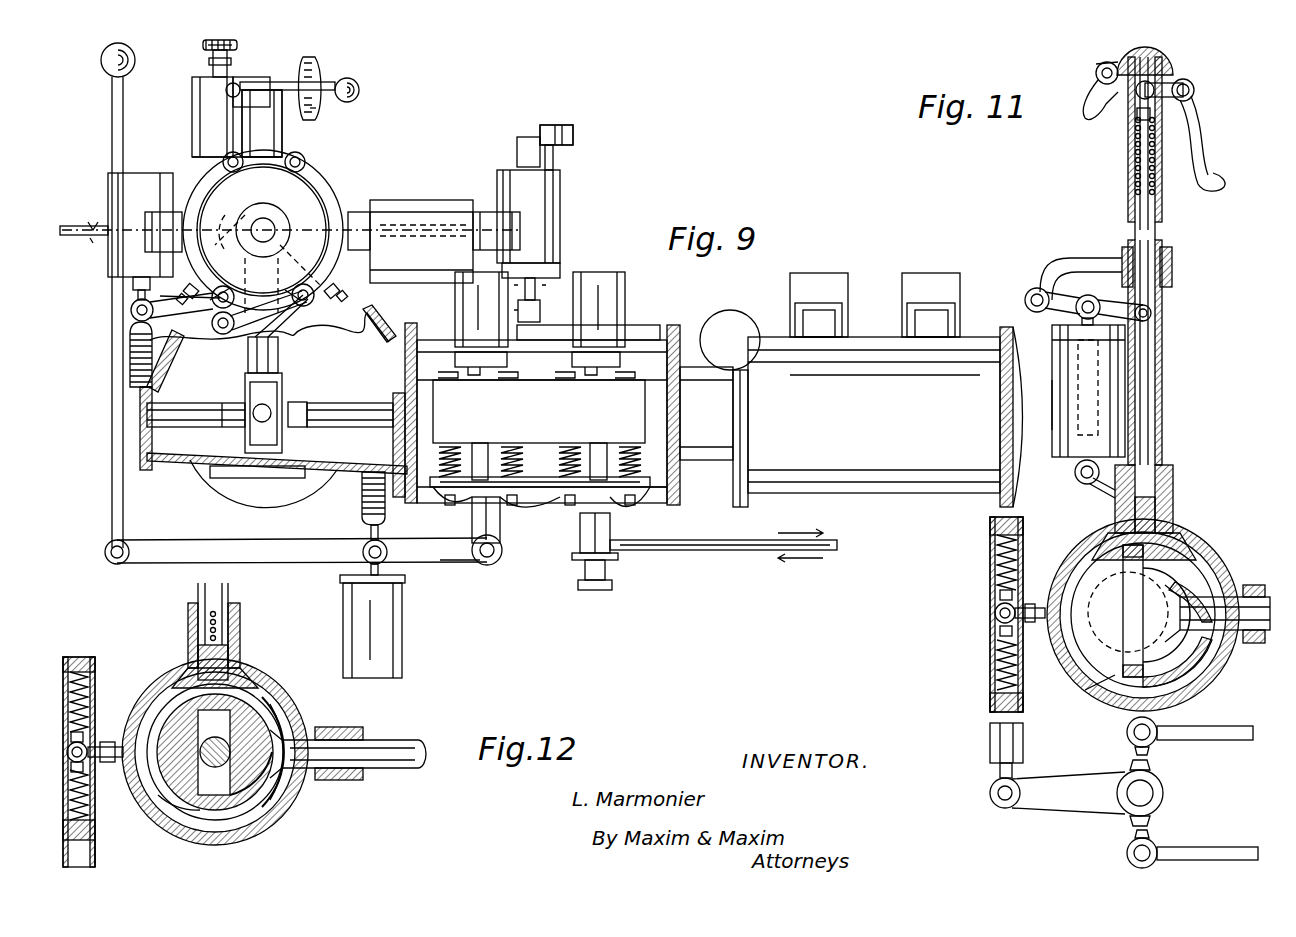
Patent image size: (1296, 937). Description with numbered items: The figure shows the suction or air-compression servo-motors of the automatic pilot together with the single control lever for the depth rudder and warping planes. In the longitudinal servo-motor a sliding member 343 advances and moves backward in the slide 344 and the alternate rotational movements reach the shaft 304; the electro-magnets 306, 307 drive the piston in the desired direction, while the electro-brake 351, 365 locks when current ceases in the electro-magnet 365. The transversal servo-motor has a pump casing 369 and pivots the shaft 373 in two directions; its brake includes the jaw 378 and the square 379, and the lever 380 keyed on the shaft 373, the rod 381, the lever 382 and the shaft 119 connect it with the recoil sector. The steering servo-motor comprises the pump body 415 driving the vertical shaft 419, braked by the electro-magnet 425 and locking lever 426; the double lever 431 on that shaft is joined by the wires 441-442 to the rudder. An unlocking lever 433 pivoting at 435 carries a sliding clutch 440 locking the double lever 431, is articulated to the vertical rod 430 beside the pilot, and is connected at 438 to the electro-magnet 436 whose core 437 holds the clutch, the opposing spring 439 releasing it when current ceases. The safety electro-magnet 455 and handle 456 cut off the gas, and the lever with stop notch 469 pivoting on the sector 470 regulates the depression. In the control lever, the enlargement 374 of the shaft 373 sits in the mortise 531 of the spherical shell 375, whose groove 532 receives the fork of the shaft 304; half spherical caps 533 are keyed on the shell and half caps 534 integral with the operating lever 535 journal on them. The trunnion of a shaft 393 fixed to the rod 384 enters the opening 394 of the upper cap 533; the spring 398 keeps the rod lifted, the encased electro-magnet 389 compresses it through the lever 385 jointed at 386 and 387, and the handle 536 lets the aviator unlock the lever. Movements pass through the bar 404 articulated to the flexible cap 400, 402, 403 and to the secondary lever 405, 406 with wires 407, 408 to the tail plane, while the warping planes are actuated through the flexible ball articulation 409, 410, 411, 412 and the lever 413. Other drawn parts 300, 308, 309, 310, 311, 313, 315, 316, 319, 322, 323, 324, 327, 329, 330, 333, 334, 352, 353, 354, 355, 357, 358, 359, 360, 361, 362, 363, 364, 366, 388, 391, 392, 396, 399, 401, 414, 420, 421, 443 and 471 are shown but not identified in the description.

In FIG. 9, the shaft 119 is at (84, 244).
In FIG. 9, the valve body 300 is at (672, 328).
In FIG. 9, the shaft 304 is at (276, 228).
In FIG. 12, the shaft 304 is at (388, 758).
In FIG. 9, the electro-magnet 306 is at (458, 280).
In FIG. 9, the electro-magnet 307 is at (604, 282).
In FIG. 9, the block 308 is at (278, 390).
In FIG. 9, the base plate 309 is at (277, 445).
In FIG. 9, the flange 310 is at (405, 372).
In FIG. 9, the plate 311 is at (628, 332).
In FIG. 9, the plunger 313 is at (486, 455).
In FIG. 9, the bolt 315 is at (448, 496).
In FIG. 9, the spring 316 is at (455, 448).
In FIG. 9, the link 319 is at (462, 540).
In FIG. 9, the plate 322 is at (522, 490).
In FIG. 9, the spring 323 is at (516, 448).
In FIG. 9, the rod 324 is at (500, 515).
In FIG. 9, the spring 327 is at (572, 448).
In FIG. 9, the yoke 329 is at (612, 497).
In FIG. 9, the rod 330 is at (580, 520).
In FIG. 9, the spring 333 is at (628, 446).
In FIG. 9, the plate 334 is at (655, 500).
In FIG. 9, the sliding member 343 is at (200, 432).
In FIG. 9, the slide 344 is at (140, 425).
In FIG. 9, the electro-brake 351 is at (263, 238).
In FIG. 9, the gear housing 352 is at (323, 172).
In FIG. 9, the link 353 is at (135, 285).
In FIG. 9, the cover 354 is at (193, 160).
In FIG. 9, the bolt 355 is at (303, 156).
In FIG. 9, the pivot 357 is at (223, 334).
In FIG. 9, the strut 358 is at (178, 361).
In FIG. 9, the connecting member 359 is at (320, 322).
In FIG. 9, the bar 360 is at (282, 334).
In FIG. 9, the bolt 361 is at (345, 298).
In FIG. 9, the pivot 362 is at (130, 312).
In FIG. 9, the bellows 363 is at (128, 340).
In FIG. 9, the support 364 is at (140, 380).
In FIG. 9, the electro-magnet 365 is at (118, 186).
In FIG. 9, the bracket 366 is at (133, 280).
In FIG. 9, the pump casing 369 is at (267, 498).
In FIG. 11, the shaft 373 is at (1255, 643).
In FIG. 12, the shaft 373 is at (300, 735).
In FIG. 11, the enlargement 374 is at (1175, 648).
In FIG. 12, the enlargement 374 is at (258, 828).
In FIG. 11, the spherical shell 375 is at (1200, 560).
In FIG. 12, the spherical shell 375 is at (335, 727).
In FIG. 9, the brake jaw 378 is at (540, 296).
In FIG. 9, the square 379 is at (505, 183).
In FIG. 12, the square 379 is at (295, 796).
In FIG. 9, the lever 380 is at (244, 122).
In FIG. 9, the rod 381 is at (556, 126).
In FIG. 9, the lever 382 is at (262, 92).
In FIG. 11, the rod 384 is at (1140, 242).
In FIG. 12, the rod 384 is at (230, 617).
In FIG. 11, the lever 385 is at (1068, 265).
In FIG. 11, the joint 386 is at (1165, 303).
In FIG. 11, the joint 387 is at (1030, 290).
In FIG. 9, the end flange 388 is at (1028, 417).
In FIG. 11, the end flange 388 is at (1060, 340).
In FIG. 11, the electro-magnet 389 is at (1068, 472).
In FIG. 11, the cylinder 391 is at (1126, 333).
In FIG. 11, the link 392 is at (1136, 114).
In FIG. 11, the shaft 393 is at (1172, 480).
In FIG. 12, the shaft 393 is at (240, 668).
In FIG. 11, the opening 394 is at (1185, 530).
In FIG. 12, the opening 394 is at (250, 684).
In FIG. 11, the pivot 396 is at (1195, 86).
In FIG. 11, the spring 398 is at (1128, 176).
In FIG. 11, the handle 399 is at (1098, 92).
In FIG. 11, the flexible cap 400 is at (1026, 600).
In FIG. 11, the ball 401 is at (1020, 630).
In FIG. 11, the flexible cap 402 is at (1024, 540).
In FIG. 11, the flexible cap 403 is at (1024, 690).
In FIG. 11, the bar 404 is at (1016, 728).
In FIG. 11, the secondary lever 405 is at (1058, 785).
In FIG. 11, the secondary lever 406 is at (1148, 768).
In FIG. 11, the wire 407 is at (1228, 742).
In FIG. 11, the wire 408 is at (1190, 848).
In FIG. 12, the flexible ball articulation 409 is at (98, 730).
In FIG. 12, the flexible ball articulation 410 is at (86, 656).
In FIG. 12, the flexible ball articulation 411 is at (84, 768).
In FIG. 12, the flexible ball articulation 412 is at (88, 810).
In FIG. 12, the lever 413 is at (93, 858).
In FIG. 12, the ring segment 414 is at (286, 806).
In FIG. 9, the pump body 415 is at (978, 338).
In FIG. 9, the vertical shaft 419 is at (613, 585).
In FIG. 9, the valve box 420 is at (835, 280).
In FIG. 9, the valve box 421 is at (918, 280).
In FIG. 9, the electro-magnet 425 is at (748, 330).
In FIG. 9, the locking lever 426 is at (718, 318).
In FIG. 9, the vertical rod 430 is at (124, 88).
In FIG. 9, the double lever 431 is at (586, 568).
In FIG. 9, the lever 433 is at (196, 540).
In FIG. 9, the pivot 435 is at (485, 565).
In FIG. 9, the electro-magnet 436 is at (360, 620).
In FIG. 9, the core 437 is at (340, 578).
In FIG. 9, the connection point 438 is at (368, 543).
In FIG. 9, the opposing spring 439 is at (362, 488).
In FIG. 9, the sliding clutch 440 is at (619, 558).
In FIG. 9, the wires 441-442 is at (757, 545).
In FIG. 9, the pivot 443 is at (124, 562).
In FIG. 9, the electro-magnet 455 is at (200, 90).
In FIG. 9, the handle 456 is at (136, 60).
In FIG. 9, the lever with stop notch 469 is at (322, 102).
In FIG. 9, the sector with stop notch 470 is at (318, 66).
In FIG. 9, the knob 471 is at (359, 85).
In FIG. 11, the mortise 531 is at (1200, 590).
In FIG. 12, the mortise 531 is at (236, 710).
In FIG. 11, the groove 532 is at (1115, 705).
In FIG. 12, the groove 532 is at (176, 810).
In FIG. 11, the half spherical caps 533 is at (1100, 545).
In FIG. 12, the half spherical caps 533 is at (138, 690).
In FIG. 11, the half caps 534 is at (1185, 685).
In FIG. 12, the half caps 534 is at (160, 690).
In FIG. 11, the operating lever 535 is at (1128, 148).
In FIG. 12, the operating lever 535 is at (197, 605).
In FIG. 11, the handle 536 is at (1204, 162).